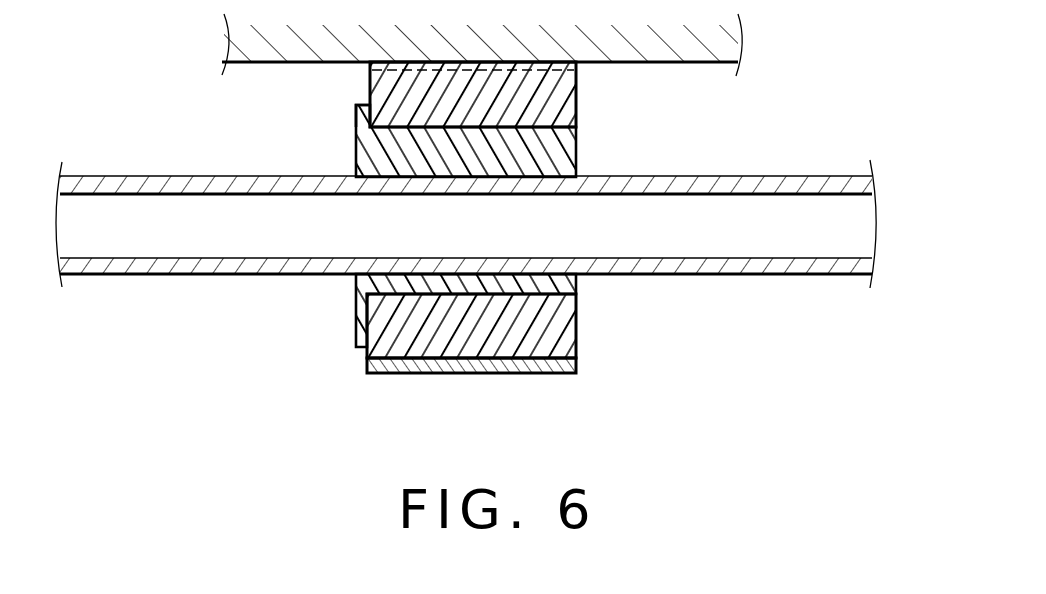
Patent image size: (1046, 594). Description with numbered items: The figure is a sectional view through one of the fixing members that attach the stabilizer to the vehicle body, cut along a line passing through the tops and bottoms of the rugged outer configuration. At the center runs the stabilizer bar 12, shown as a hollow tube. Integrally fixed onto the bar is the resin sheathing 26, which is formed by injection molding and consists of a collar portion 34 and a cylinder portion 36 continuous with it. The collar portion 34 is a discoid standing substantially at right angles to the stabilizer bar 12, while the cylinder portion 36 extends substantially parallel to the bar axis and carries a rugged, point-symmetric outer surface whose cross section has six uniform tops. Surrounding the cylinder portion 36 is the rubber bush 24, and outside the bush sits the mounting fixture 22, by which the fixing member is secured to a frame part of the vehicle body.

The stabilizer bar 12 is at (830, 186).
The mounting fixture 22 is at (505, 373).
The rubber bush 24 is at (553, 100).
The sheathing 26 is at (575, 282).
The collar portion 34 is at (357, 110).
The cylinder portion 36 is at (563, 145).